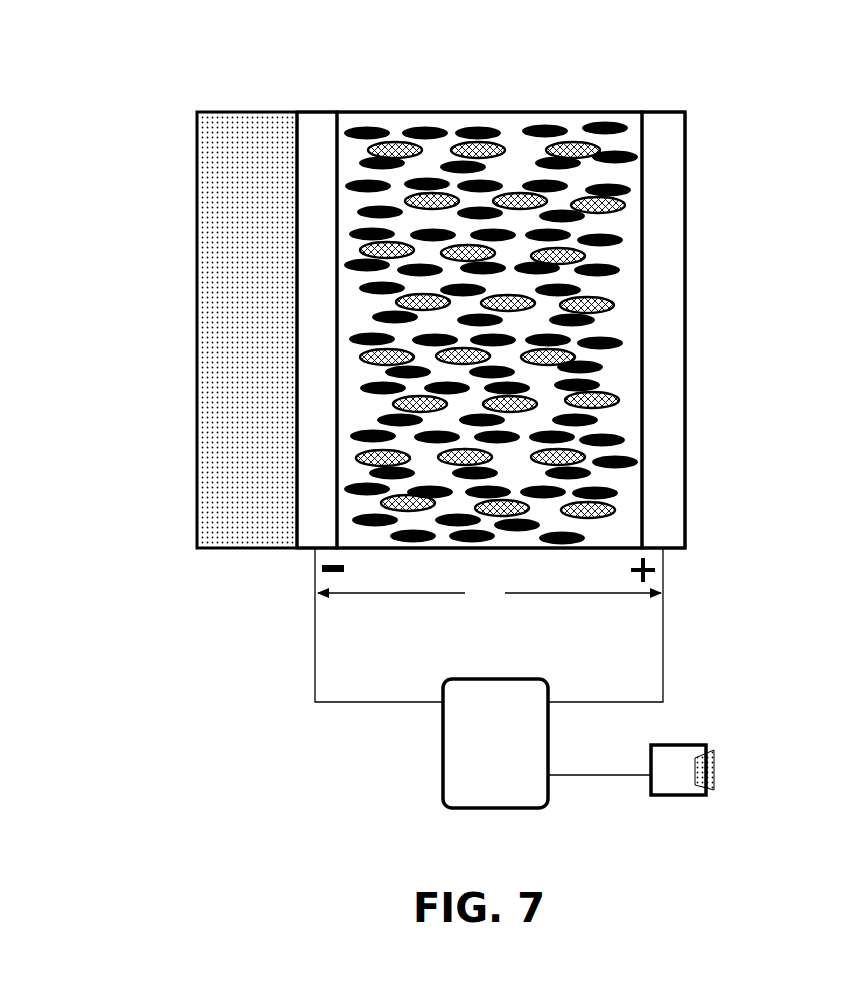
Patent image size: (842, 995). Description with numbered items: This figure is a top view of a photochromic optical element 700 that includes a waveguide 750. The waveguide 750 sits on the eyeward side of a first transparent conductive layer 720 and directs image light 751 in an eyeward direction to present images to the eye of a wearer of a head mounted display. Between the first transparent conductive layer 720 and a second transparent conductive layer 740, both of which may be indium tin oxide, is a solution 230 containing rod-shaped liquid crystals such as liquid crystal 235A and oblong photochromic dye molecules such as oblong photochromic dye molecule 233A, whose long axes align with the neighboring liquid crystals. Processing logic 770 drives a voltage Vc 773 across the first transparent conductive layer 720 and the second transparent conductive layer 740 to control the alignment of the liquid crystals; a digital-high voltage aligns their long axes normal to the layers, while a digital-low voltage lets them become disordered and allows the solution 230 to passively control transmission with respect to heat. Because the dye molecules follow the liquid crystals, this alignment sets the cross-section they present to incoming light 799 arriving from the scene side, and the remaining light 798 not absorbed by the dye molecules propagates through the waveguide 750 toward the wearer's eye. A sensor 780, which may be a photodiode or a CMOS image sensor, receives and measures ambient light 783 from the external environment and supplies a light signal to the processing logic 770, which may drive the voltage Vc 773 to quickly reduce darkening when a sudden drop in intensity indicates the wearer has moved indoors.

The photochromic optical element 700 is at (188, 96).
The waveguide 750 is at (297, 97).
The first transparent conductive layer 720 is at (336, 97).
The solution 230 is at (641, 97).
The second transparent conductive layer 740 is at (684, 97).
The image light 751 is at (197, 130).
The remaining light 798 is at (337, 331).
The incoming light 799 is at (687, 333).
The voltage Vc 773 is at (475, 596).
The oblong photochromic dye molecule 233A is at (548, 540).
The liquid crystal 235A is at (597, 519).
The processing logic 770 is at (511, 776).
The sensor 780 is at (663, 798).
The ambient light 783 is at (718, 773).